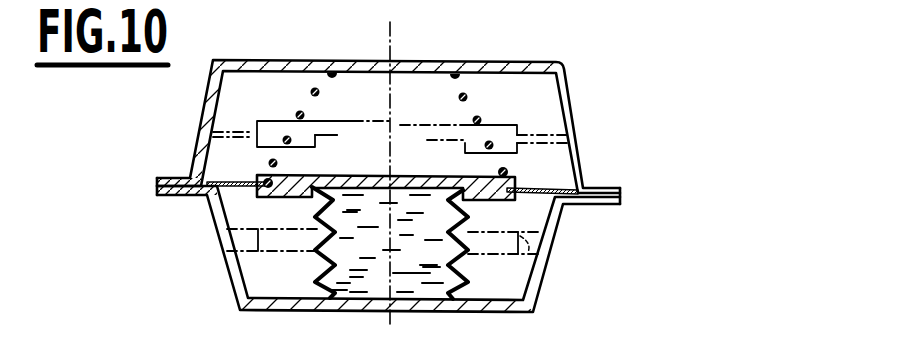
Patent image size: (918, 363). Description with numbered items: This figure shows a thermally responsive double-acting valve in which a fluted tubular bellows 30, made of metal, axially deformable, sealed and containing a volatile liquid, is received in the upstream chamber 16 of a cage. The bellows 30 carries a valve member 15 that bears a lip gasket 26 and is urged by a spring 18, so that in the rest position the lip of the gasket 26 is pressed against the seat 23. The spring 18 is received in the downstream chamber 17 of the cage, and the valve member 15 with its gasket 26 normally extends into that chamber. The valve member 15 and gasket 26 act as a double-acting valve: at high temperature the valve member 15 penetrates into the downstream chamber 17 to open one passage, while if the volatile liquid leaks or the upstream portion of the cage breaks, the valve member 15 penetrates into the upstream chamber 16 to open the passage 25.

The first valve member 15 is at (347, 174).
The upstream chamber 16 is at (252, 272).
The downstream chamber 17 is at (260, 87).
The spring 18 is at (320, 92).
The seat 23 is at (205, 198).
The passage 25 is at (518, 218).
The lip gasket 26 is at (222, 178).
The fluted tubular bellows 30 is at (332, 240).